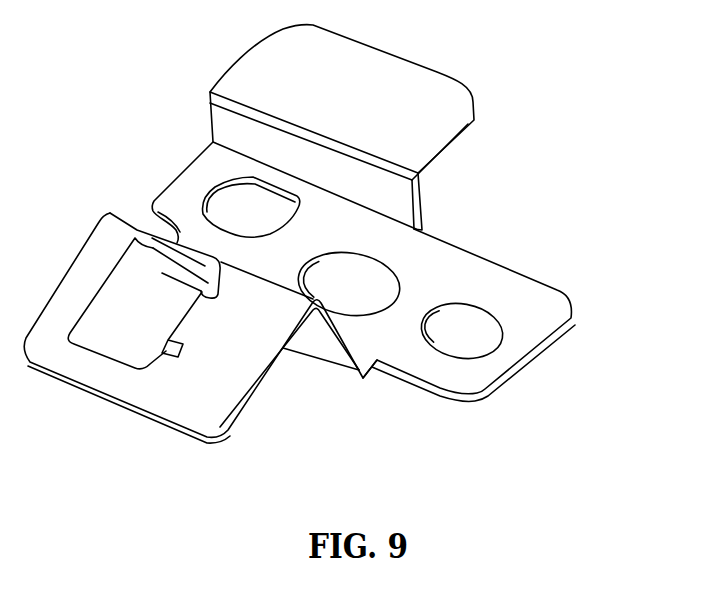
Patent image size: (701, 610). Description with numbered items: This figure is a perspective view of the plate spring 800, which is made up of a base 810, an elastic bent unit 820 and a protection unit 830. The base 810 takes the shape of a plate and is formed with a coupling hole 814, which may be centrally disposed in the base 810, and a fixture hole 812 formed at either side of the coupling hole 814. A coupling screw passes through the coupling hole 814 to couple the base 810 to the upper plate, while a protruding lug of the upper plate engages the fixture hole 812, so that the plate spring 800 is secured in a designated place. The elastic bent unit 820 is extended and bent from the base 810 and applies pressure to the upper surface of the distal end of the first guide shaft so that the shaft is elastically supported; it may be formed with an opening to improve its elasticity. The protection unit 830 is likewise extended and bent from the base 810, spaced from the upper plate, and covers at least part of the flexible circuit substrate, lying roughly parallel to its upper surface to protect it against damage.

The plate spring 800 is at (500, 149).
The base 810 is at (393, 271).
The fixture hole 812 is at (472, 310).
The coupling hole 814 is at (375, 266).
The elastic bent unit 820 is at (228, 393).
The protection unit 830 is at (425, 86).